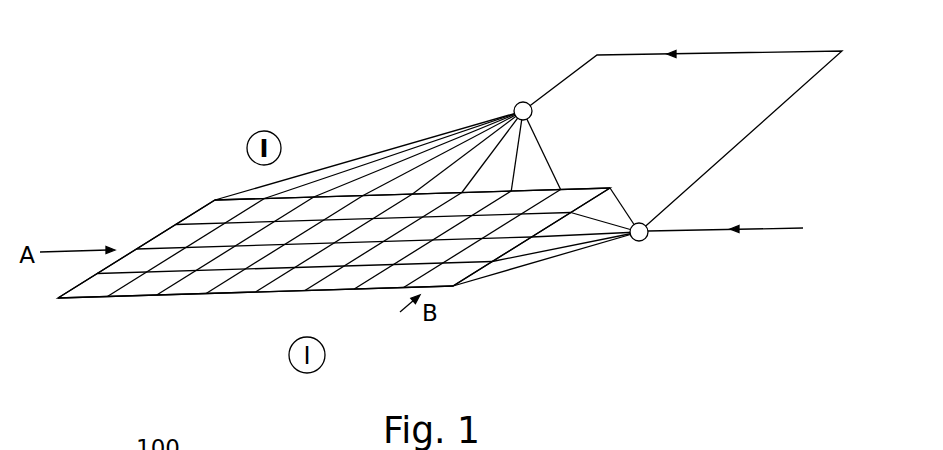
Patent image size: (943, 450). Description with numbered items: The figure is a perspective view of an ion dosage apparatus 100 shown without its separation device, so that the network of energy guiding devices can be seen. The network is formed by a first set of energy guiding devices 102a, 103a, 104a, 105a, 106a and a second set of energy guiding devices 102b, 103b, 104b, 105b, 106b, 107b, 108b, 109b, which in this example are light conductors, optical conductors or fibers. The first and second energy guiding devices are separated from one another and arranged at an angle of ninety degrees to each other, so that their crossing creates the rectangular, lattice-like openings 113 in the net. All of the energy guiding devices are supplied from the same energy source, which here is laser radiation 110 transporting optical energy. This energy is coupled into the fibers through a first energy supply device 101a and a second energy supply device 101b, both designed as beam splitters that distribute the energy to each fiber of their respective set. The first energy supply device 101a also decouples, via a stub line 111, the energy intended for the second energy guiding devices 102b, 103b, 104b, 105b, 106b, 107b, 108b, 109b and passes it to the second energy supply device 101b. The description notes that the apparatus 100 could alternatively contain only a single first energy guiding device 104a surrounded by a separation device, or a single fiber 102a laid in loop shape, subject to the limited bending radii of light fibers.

The ion dosage apparatus 100 is at (281, 76).
The first energy supply device 101a is at (646, 243).
The second energy supply device 101b is at (522, 101).
The first energy guiding device 102a is at (367, 289).
The second energy guiding device 102b is at (90, 299).
The first energy guiding device 103a is at (405, 288).
The second energy guiding device 103b is at (168, 295).
The first energy guiding device 104a is at (497, 272).
The second energy guiding device 104b is at (225, 290).
The first energy guiding device 105a is at (546, 247).
The second energy guiding device 105b is at (303, 190).
The first energy guiding device 106a is at (587, 190).
The second energy guiding device 106b is at (387, 205).
The second energy guiding device 107b is at (440, 198).
The second energy guiding device 108b is at (495, 192).
The second energy guiding device 109b is at (557, 188).
The laser radiation 110 is at (773, 223).
The stub line 111 is at (773, 117).
The rectangular openings 113 is at (183, 230).